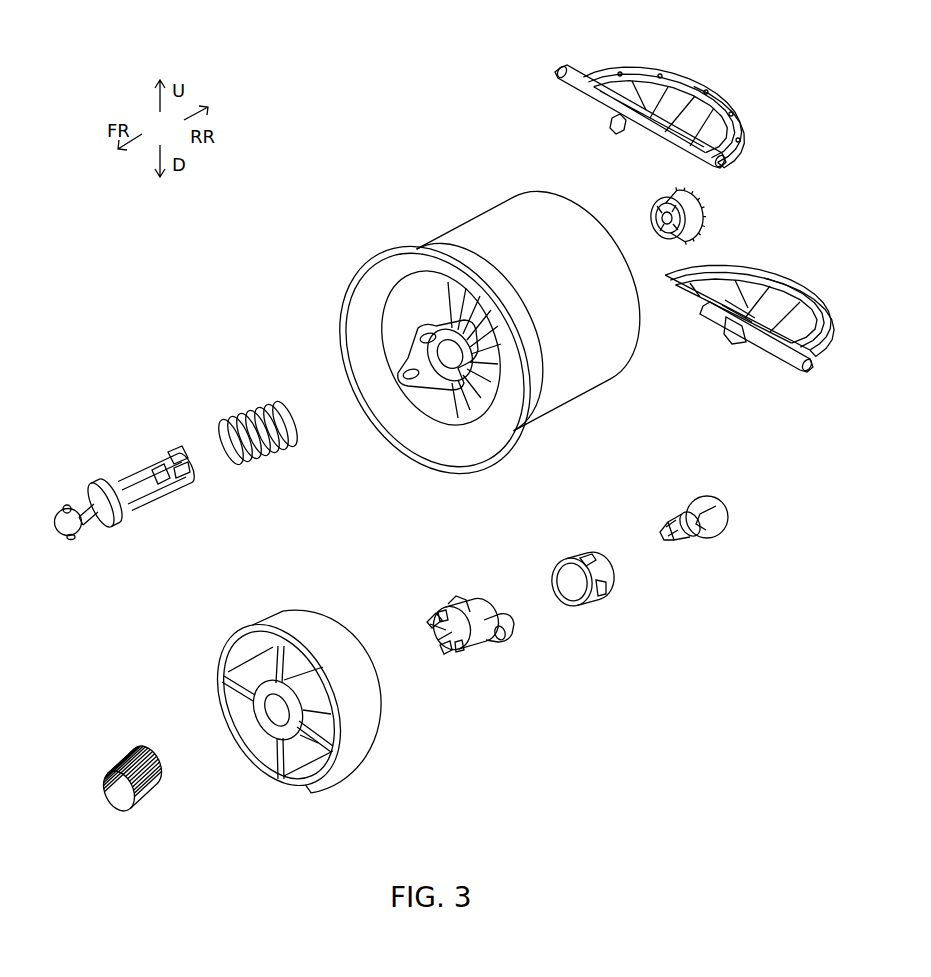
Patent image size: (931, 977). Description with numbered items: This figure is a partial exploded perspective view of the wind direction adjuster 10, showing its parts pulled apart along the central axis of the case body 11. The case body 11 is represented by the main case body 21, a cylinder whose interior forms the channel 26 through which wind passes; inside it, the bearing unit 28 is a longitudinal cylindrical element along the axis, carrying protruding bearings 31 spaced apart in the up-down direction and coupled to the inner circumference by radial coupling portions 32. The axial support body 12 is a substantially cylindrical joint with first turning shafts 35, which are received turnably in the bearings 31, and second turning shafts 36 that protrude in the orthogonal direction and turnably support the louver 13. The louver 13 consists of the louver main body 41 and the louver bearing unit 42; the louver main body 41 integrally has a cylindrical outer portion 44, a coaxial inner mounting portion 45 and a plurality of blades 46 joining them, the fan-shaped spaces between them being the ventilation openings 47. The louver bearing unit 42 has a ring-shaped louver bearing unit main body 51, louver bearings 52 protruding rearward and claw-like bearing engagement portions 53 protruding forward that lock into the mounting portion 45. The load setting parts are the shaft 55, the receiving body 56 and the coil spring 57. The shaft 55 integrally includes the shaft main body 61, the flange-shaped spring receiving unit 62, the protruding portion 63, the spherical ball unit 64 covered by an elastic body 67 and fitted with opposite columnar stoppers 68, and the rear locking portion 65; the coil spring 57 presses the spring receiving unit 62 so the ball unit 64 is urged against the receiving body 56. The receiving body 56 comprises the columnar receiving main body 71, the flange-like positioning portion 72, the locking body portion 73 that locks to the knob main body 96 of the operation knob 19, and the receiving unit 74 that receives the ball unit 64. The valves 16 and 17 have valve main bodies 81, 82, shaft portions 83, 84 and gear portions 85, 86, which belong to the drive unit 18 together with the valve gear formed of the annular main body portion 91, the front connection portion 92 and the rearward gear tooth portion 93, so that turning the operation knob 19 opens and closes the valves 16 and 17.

The wind direction adjuster 10 is at (420, 62).
The case body 11 is at (440, 170).
The axial support body 12 is at (586, 527).
The louver 13 is at (366, 542).
The valve 16 is at (796, 288).
The valve 17 is at (684, 76).
The drive unit 18 is at (731, 227).
The operation knob 19 is at (120, 800).
The main case body 21 is at (528, 200).
The channel 26 is at (598, 380).
The bearing unit 28 is at (419, 249).
The bearings 31 is at (408, 372).
The coupling portions 32 is at (502, 462).
The first turning shafts 35 is at (593, 562).
The second turning shafts 36 is at (563, 573).
The louver main body 41 is at (307, 608).
The louver bearing unit 42 is at (481, 593).
The outer portion 44 is at (363, 737).
The mounting portion 45 is at (319, 760).
The blades 46 is at (280, 650).
The ventilation openings 47 is at (242, 652).
The louver bearing unit main body 51 is at (466, 654).
The louver bearings 52 is at (463, 597).
The bearing engagement portions 53 is at (438, 613).
The shaft 55 is at (128, 480).
The receiving body 56 is at (700, 500).
The coil spring 57 is at (266, 407).
The shaft main body 61 is at (152, 477).
The spring receiving unit 62 is at (103, 485).
The protruding portion 63 is at (85, 507).
The ball unit 64 is at (60, 532).
The locking portion 65 is at (183, 460).
The elastic body 67 is at (64, 513).
The stoppers 68 is at (67, 506).
The receiving main body 71 is at (720, 530).
The positioning portion 72 is at (697, 538).
The locking body portion 73 is at (667, 533).
The receiving unit 74 is at (724, 518).
The valve main body 81 is at (822, 327).
The valve main body 82 is at (738, 128).
The shaft portion 83 is at (712, 323).
The shaft portion 84 is at (641, 130).
The gear portion 85 is at (741, 335).
The gear portion 86 is at (616, 134).
The main body portion 91 is at (657, 202).
The connection portion 92 is at (656, 220).
The gear tooth portion 93 is at (694, 193).
The knob main body 96 is at (127, 757).